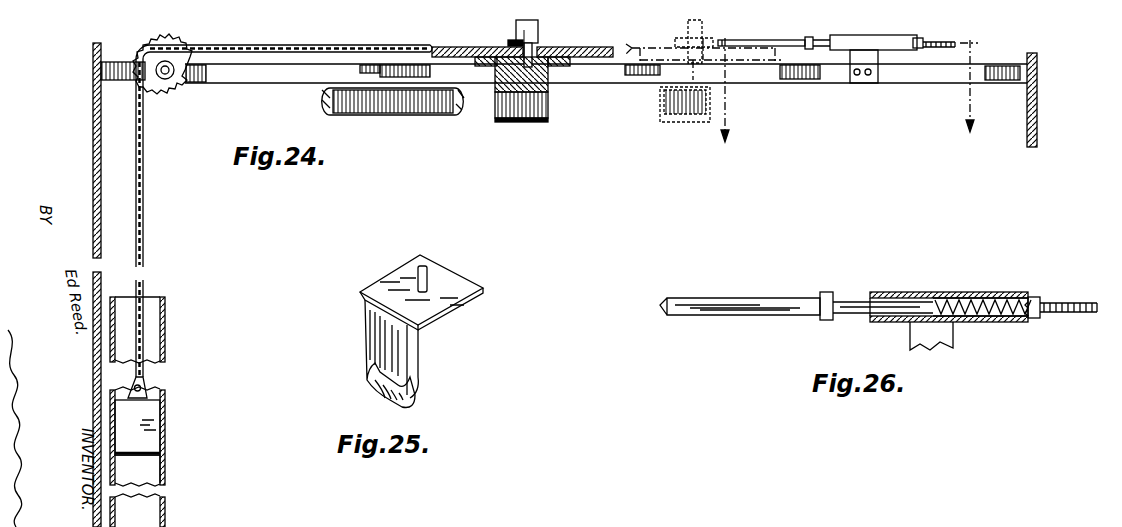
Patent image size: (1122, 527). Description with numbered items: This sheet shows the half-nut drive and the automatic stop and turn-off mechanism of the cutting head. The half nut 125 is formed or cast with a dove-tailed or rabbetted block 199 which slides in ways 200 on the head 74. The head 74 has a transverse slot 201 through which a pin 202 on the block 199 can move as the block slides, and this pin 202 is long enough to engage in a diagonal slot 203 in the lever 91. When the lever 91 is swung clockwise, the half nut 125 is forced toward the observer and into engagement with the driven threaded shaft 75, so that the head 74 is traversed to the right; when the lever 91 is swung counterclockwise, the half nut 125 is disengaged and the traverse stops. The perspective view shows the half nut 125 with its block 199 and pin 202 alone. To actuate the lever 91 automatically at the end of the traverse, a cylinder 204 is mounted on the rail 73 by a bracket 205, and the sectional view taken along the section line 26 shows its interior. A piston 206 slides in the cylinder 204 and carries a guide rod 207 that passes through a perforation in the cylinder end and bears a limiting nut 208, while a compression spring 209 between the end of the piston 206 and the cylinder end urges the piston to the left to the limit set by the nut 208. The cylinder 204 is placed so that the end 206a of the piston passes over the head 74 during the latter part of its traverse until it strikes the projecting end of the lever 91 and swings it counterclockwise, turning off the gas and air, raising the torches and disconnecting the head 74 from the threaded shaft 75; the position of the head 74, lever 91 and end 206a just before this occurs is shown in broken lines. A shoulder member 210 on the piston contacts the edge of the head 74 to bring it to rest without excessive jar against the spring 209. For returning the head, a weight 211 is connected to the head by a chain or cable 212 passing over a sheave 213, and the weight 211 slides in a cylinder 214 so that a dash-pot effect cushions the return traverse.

In FIG. 24, the rail 73 is at (250, 78).
In FIG. 24, the head 74 is at (765, 85).
In FIG. 24, the threaded shaft 75 is at (325, 98).
In FIG. 24, the lever 91 is at (523, 24).
In FIG. 24, the half nut 125 is at (548, 108).
In FIG. 25, the half nut 125 is at (410, 352).
In FIG. 24, the dove-tailed block 199 is at (497, 92).
In FIG. 25, the dove-tailed block 199 is at (470, 277).
In FIG. 24, the ways 200 is at (478, 74).
In FIG. 24, the transverse slot 201 is at (548, 47).
In FIG. 24, the pin 202 is at (536, 28).
In FIG. 25, the pin 202 is at (425, 266).
In FIG. 24, the diagonal slot 203 is at (510, 40).
In FIG. 24, the cylinder 204 is at (880, 35).
In FIG. 26, the cylinder 204 is at (975, 292).
In FIG. 24, the bracket 205 is at (866, 80).
In FIG. 26, the bracket 205 is at (940, 336).
In FIG. 26, the piston 206 is at (845, 313).
In FIG. 24, the end of the piston 206a is at (760, 40).
In FIG. 26, the end of the piston 206a is at (662, 297).
In FIG. 26, the guide rod 207 is at (1060, 302).
In FIG. 26, the limiting nut 208 is at (1037, 297).
In FIG. 26, the compression spring 209 is at (1020, 292).
In FIG. 24, the shoulder member 210 is at (810, 37).
In FIG. 26, the shoulder member 210 is at (830, 292).
In FIG. 24, the weight 211 is at (150, 430).
In FIG. 24, the chain or cable 212 is at (143, 247).
In FIG. 24, the sheave 213 is at (172, 92).
In FIG. 24, the cylinder 214 is at (160, 462).
In FIG. 24, the section line 26- 26 is at (845, 101).